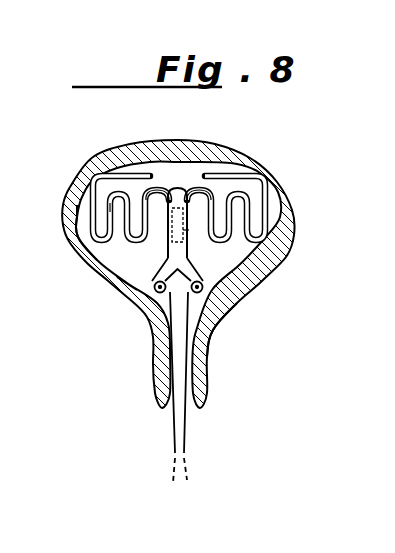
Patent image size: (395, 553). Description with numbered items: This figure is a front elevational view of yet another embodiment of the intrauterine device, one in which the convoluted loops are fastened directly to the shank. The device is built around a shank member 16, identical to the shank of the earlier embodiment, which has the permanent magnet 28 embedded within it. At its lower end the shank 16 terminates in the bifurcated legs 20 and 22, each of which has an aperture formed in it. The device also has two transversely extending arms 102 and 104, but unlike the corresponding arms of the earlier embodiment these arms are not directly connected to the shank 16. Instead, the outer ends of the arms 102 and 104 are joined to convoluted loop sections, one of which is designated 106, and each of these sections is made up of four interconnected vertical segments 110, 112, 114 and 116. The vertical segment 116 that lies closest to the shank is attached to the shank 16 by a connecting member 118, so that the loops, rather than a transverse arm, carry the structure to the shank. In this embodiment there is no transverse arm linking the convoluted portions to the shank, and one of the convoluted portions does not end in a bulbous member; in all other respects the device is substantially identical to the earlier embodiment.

The transversely extending arm 102 is at (132, 171).
The transversely extending arm 104 is at (236, 173).
The vertical segment 116 is at (181, 190).
The connecting member 118 is at (157, 188).
The vertical segment 114 is at (233, 212).
The vertical segment 112 is at (112, 208).
The vertical segment 110 is at (78, 213).
The convoluted loop section 106 is at (84, 243).
The shank member 16 is at (130, 270).
The bifurcated leg 22 is at (157, 285).
The bifurcated leg 20 is at (236, 293).
The permanent magnet 28 is at (189, 233).
The tube stem T is at (188, 441).